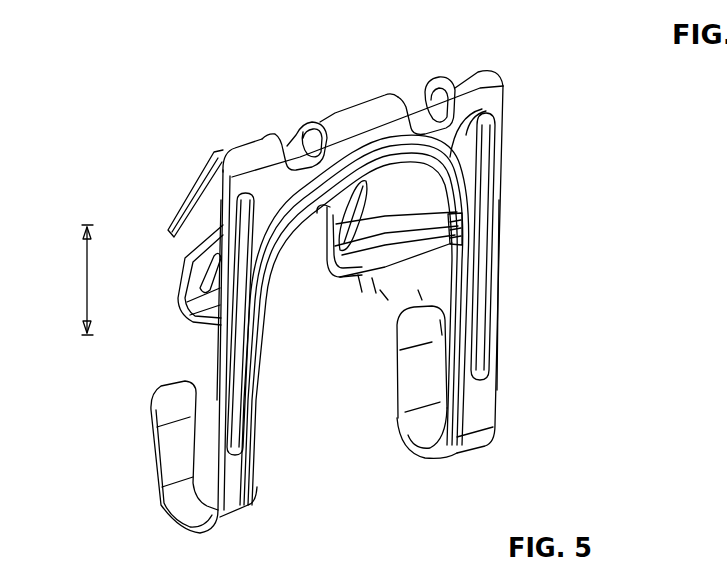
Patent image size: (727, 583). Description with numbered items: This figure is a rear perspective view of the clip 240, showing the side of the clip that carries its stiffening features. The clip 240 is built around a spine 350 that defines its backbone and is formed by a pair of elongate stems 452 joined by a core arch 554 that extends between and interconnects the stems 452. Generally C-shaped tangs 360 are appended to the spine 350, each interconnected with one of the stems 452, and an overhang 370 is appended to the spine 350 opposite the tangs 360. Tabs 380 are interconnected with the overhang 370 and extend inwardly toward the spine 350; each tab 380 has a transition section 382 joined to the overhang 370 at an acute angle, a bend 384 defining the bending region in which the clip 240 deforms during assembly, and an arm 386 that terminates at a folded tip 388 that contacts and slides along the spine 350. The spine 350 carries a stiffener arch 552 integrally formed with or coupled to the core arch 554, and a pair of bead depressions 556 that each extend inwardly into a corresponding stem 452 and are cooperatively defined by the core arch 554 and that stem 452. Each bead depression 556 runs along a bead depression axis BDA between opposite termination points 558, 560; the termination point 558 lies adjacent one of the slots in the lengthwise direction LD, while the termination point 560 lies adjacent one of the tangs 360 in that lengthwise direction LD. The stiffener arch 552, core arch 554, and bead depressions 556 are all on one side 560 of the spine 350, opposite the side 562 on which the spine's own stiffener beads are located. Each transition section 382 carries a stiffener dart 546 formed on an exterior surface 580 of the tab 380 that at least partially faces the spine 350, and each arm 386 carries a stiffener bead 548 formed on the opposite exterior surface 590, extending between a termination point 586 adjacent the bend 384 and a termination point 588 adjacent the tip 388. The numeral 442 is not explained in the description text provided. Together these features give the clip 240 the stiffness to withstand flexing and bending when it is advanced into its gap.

The clip 240 is at (323, 62).
The bracket 442 is at (593, 5).
The spine 350 is at (490, 101).
The tangs 360 is at (171, 471).
The overhang 370 is at (222, 205).
The tabs 380 is at (187, 272).
The transition section 382 is at (330, 208).
The bend 384 is at (362, 293).
The arm 386 is at (388, 302).
The tip 388 is at (470, 257).
The elongate stem 452 is at (498, 297).
The stiffener darts 546 is at (467, 156).
The stiffener beads 548 is at (441, 336).
The stiffener arch 552 is at (354, 158).
The core arch 554 is at (476, 125).
The bead depressions 556 is at (480, 331).
The termination point 558 is at (246, 235).
The termination point 560 is at (453, 145).
The side 562 is at (186, 195).
The exterior surface 580 is at (450, 224).
The termination point 586 is at (422, 302).
The termination point 588 is at (414, 418).
The exterior surface 590 is at (376, 294).
The lengthwise direction LD is at (87, 258).
The bead depression axis BDA is at (233, 355).